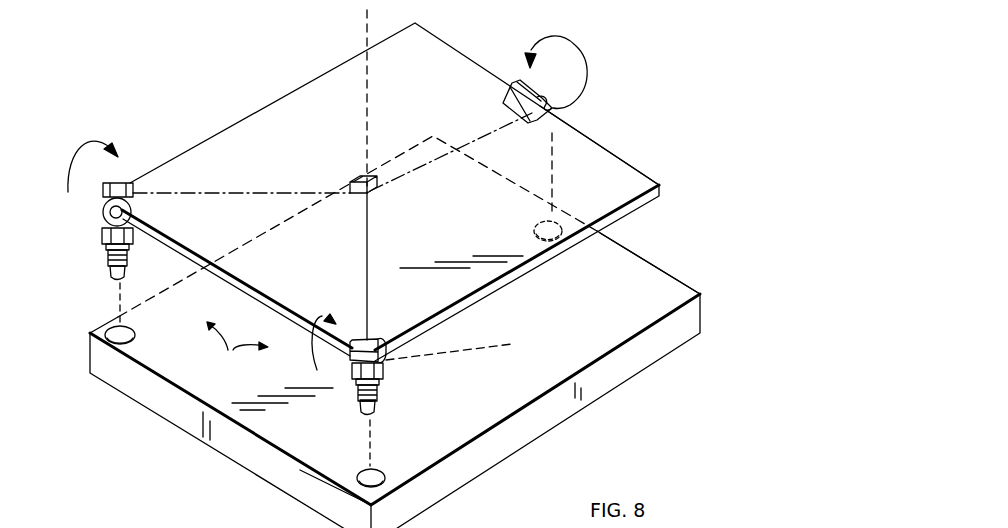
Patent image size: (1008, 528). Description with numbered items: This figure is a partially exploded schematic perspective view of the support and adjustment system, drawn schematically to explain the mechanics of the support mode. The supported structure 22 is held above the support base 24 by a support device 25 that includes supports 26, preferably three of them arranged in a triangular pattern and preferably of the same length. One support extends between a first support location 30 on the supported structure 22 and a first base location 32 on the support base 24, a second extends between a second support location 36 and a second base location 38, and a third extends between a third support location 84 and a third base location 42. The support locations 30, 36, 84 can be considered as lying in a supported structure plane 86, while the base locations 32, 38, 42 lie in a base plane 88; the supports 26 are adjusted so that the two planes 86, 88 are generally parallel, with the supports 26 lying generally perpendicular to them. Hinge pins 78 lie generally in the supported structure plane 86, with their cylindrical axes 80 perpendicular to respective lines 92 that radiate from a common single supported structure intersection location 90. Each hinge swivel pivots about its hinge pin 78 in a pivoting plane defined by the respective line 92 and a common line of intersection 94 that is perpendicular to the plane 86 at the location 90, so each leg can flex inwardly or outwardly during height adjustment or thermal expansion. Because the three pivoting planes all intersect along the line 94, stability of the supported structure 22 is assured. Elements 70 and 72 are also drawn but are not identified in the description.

The supported structure 22 is at (250, 120).
The support base 24 is at (173, 417).
The support device 25 is at (237, 348).
The supports 26 is at (105, 259).
The first support location 30 is at (390, 359).
The first base location 32 is at (386, 488).
The second support location 36 is at (100, 216).
The second base location 38 is at (93, 331).
The third base location 42 is at (534, 230).
The threaded nipple 70 is at (358, 411).
The plate side face 72 is at (336, 488).
The hinge pins 78 is at (124, 212).
The cylindrical axes 80 is at (478, 344).
The third support location 84 is at (582, 100).
The supported structure plane 86 is at (590, 138).
The base plane 88 is at (642, 259).
The supported structure intersection location 90 is at (356, 200).
The lines 92 is at (199, 193).
The common line of intersection 94 is at (362, 79).